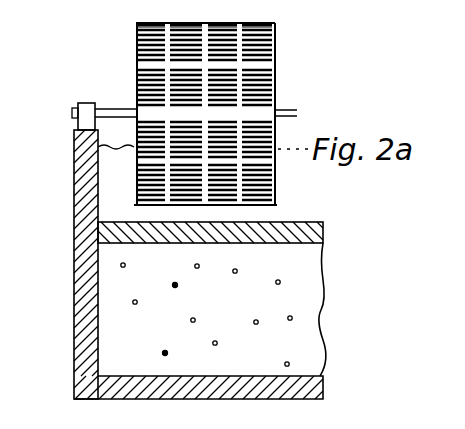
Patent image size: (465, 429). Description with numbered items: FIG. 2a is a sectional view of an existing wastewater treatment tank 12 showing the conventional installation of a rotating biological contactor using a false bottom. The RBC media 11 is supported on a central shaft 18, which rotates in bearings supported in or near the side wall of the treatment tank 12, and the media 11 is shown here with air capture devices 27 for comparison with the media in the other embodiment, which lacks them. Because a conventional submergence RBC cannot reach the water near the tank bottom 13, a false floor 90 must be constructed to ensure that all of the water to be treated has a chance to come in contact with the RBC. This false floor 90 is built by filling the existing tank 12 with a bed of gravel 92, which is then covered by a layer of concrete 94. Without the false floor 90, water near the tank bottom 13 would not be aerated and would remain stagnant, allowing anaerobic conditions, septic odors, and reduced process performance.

The labyrinthine media 11 is at (276, 38).
The air capture devices 27 is at (138, 43).
The central shaft 18 is at (112, 110).
The treatment tank 12 is at (88, 162).
The false floor 90 is at (118, 218).
The layer of concrete 94 is at (302, 232).
The bed of gravel 92 is at (115, 306).
The tank bottom 13 is at (312, 386).